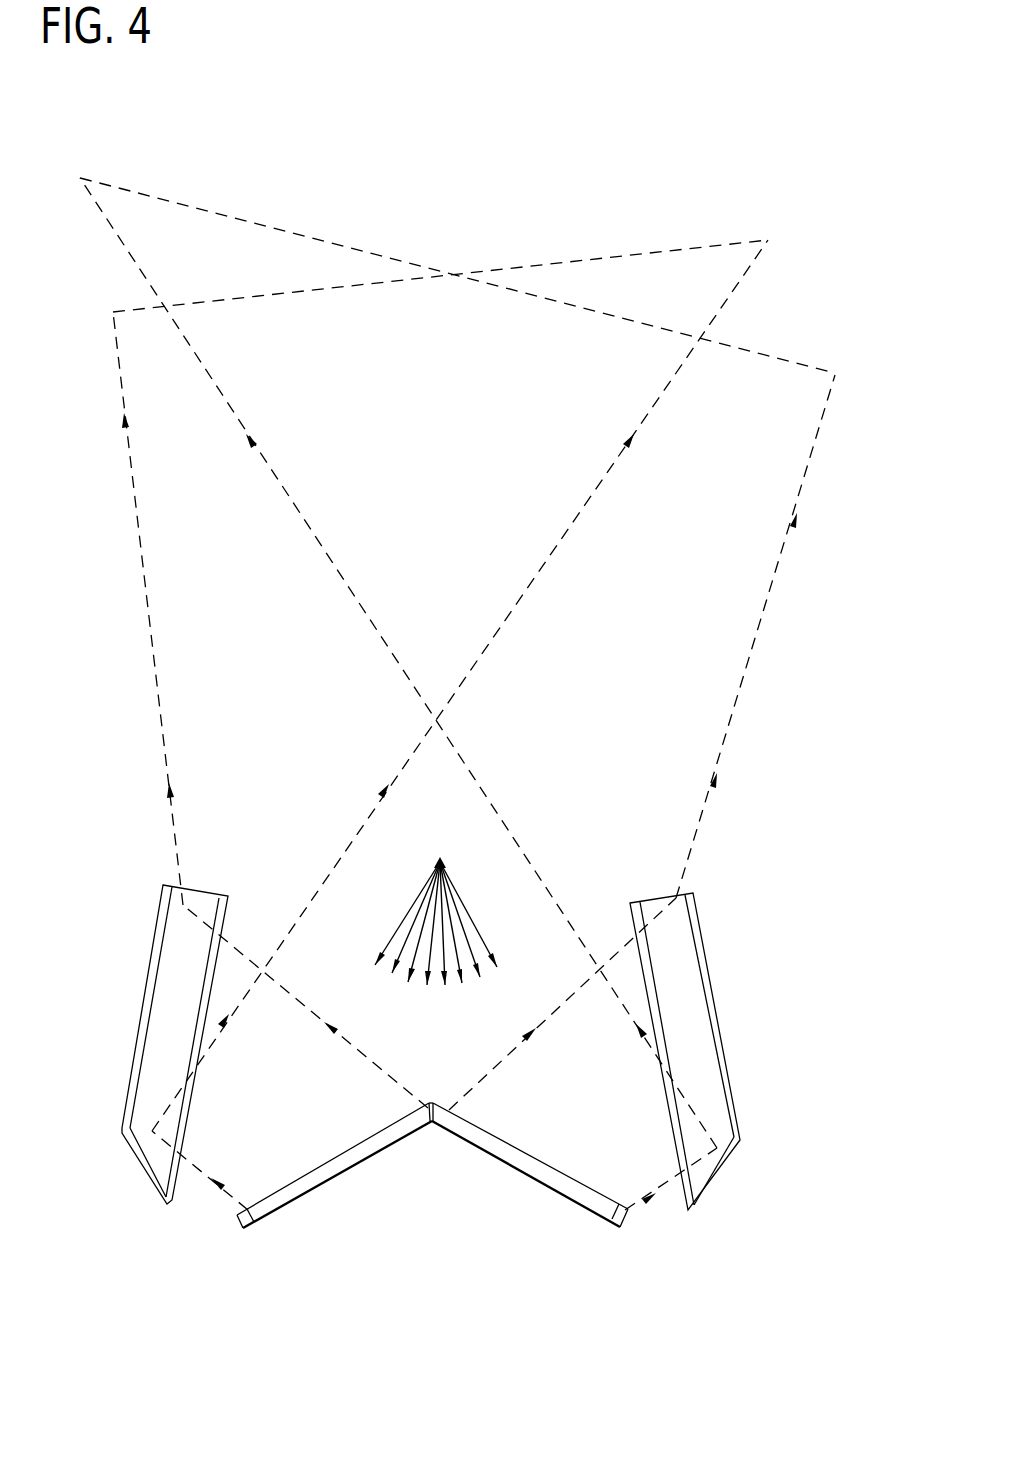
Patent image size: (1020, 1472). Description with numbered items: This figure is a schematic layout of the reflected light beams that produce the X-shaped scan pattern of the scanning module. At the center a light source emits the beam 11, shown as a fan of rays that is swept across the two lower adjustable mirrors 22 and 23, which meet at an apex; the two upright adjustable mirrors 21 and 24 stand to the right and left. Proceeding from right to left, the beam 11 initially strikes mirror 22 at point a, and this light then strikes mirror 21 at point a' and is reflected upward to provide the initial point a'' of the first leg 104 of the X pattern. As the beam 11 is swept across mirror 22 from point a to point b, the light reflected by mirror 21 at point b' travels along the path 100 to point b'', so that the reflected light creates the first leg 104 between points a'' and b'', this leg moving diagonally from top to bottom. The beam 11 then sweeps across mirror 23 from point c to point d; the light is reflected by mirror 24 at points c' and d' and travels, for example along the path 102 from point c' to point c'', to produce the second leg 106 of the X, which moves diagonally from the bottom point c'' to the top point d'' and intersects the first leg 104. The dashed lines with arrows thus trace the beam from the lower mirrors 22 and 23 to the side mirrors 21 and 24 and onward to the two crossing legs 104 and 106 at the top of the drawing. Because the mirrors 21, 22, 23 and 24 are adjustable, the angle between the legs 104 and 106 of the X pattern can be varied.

The beam 11 is at (422, 884).
The adjustable mirror 21 is at (710, 1052).
The adjustable mirror 22 is at (533, 1168).
The adjustable mirror 23 is at (328, 1170).
The adjustable mirror 24 is at (150, 1152).
The light beam 100 is at (757, 642).
The light beam 102 is at (150, 610).
The first leg 104 is at (345, 245).
The second leg 106 is at (590, 258).
The point a is at (591, 1270).
The point b is at (460, 1164).
The point c is at (418, 1165).
The point d is at (290, 1259).
The point a' is at (706, 1210).
The point b' is at (624, 1004).
The point c' is at (245, 1002).
The point d' is at (153, 1124).
The initial point a'' is at (398, 631).
The point b'' is at (851, 319).
The point c'' is at (79, 273).
The point d'' is at (483, 623).